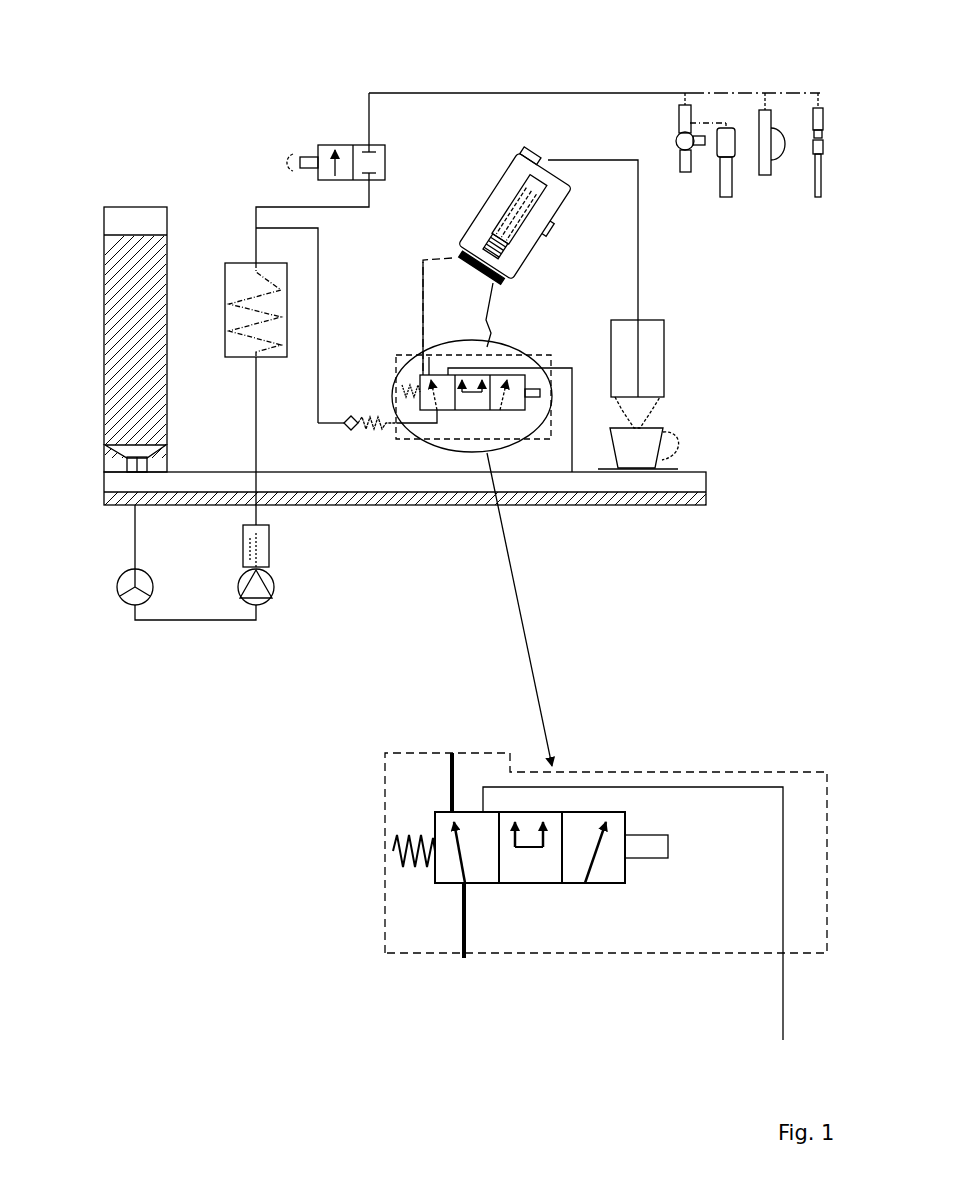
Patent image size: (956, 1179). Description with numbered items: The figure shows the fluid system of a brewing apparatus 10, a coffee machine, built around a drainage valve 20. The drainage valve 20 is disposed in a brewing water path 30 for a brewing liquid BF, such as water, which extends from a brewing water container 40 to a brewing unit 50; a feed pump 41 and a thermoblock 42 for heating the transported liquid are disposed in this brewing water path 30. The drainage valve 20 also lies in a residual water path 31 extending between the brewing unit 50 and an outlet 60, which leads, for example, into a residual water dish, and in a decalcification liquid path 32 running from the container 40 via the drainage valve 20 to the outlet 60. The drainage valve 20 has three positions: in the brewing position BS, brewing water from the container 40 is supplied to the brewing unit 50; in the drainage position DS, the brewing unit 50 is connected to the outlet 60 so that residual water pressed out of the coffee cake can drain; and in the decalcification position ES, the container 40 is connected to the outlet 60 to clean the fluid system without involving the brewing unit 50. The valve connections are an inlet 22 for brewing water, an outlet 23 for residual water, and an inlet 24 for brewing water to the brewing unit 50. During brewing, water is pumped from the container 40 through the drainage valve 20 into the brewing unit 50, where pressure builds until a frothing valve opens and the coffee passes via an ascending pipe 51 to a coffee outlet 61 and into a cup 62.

The brewing apparatus 10 is at (789, 58).
The drainage valve 20 is at (524, 350).
The inlet 22 is at (462, 887).
The outlet 23 is at (482, 806).
The inlet 24 is at (450, 808).
The brewing water path 30 is at (317, 423).
The residual water path 31 is at (572, 453).
The decalcification liquid path 32 is at (610, 815).
The brewing water container 40 is at (123, 207).
The feed pump 41 is at (275, 585).
The thermoblock 42 is at (225, 265).
The brewing unit 50 is at (434, 252).
The ascending pipe 51 is at (530, 188).
The outlet 60 is at (577, 486).
The coffee outlet 61 is at (638, 267).
The cup 62 is at (660, 432).
The brewing liquid BF is at (140, 260).
The brewing position BS is at (487, 890).
The drainage position DS is at (547, 890).
The decalcification position ES is at (607, 890).